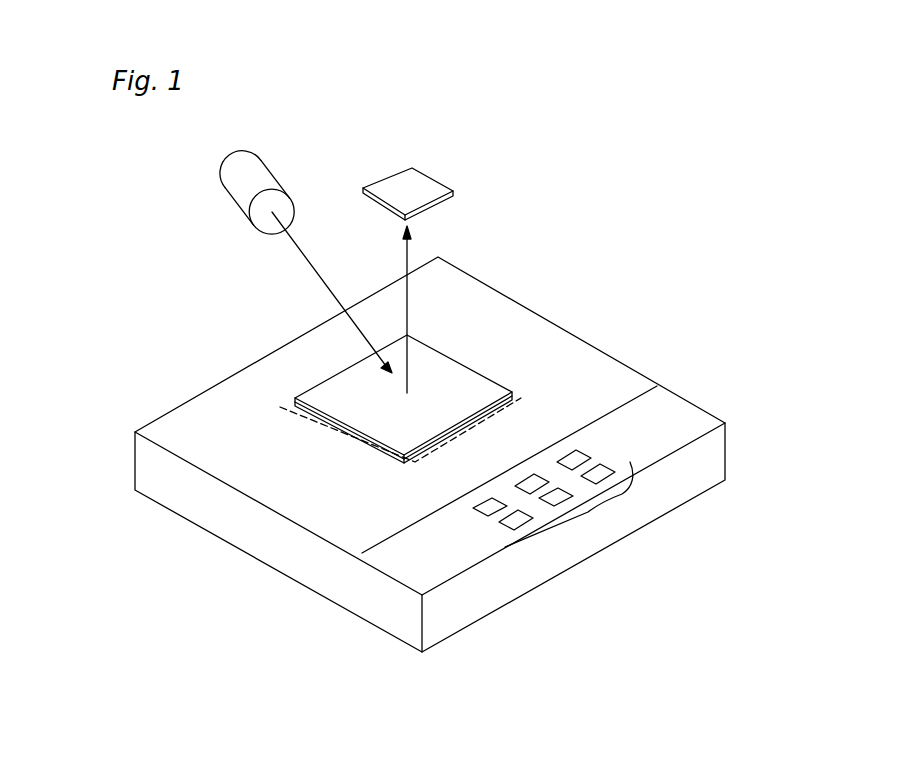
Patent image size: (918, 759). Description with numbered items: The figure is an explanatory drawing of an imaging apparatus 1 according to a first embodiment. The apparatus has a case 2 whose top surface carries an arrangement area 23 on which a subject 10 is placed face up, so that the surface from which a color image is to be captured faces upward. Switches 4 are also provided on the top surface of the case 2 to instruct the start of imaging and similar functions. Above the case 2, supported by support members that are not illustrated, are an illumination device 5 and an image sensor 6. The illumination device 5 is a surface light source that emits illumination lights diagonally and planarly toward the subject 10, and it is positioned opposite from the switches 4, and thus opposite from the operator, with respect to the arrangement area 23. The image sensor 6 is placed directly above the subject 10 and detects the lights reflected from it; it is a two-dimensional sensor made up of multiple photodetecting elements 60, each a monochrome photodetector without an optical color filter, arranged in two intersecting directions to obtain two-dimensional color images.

The imaging apparatus 1 is at (578, 165).
The case 2 is at (634, 371).
The switches 4 is at (590, 512).
The illumination device 5 is at (233, 189).
The image sensor 6 is at (439, 174).
The photodetecting elements 60 is at (428, 177).
The subject 10 is at (468, 366).
The arrangement area 23 is at (347, 433).